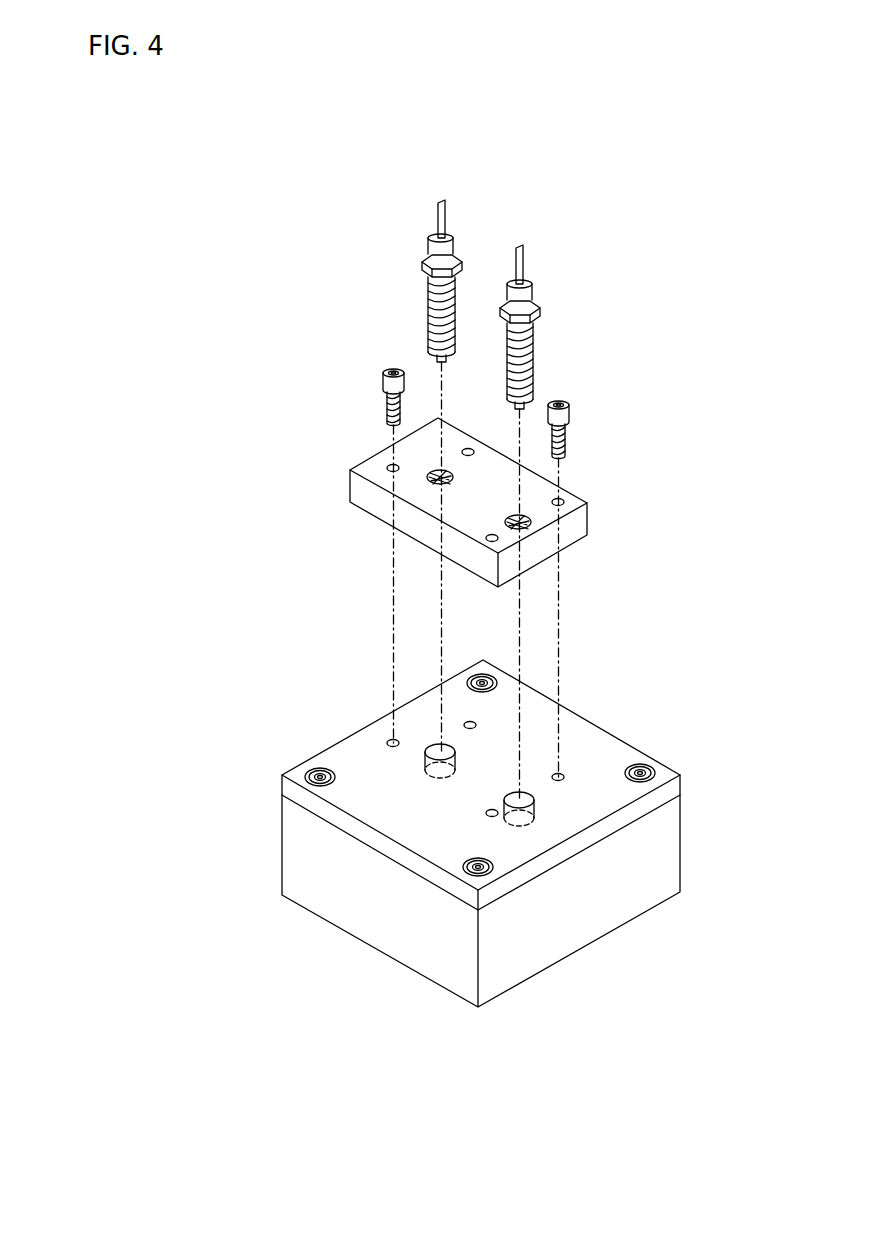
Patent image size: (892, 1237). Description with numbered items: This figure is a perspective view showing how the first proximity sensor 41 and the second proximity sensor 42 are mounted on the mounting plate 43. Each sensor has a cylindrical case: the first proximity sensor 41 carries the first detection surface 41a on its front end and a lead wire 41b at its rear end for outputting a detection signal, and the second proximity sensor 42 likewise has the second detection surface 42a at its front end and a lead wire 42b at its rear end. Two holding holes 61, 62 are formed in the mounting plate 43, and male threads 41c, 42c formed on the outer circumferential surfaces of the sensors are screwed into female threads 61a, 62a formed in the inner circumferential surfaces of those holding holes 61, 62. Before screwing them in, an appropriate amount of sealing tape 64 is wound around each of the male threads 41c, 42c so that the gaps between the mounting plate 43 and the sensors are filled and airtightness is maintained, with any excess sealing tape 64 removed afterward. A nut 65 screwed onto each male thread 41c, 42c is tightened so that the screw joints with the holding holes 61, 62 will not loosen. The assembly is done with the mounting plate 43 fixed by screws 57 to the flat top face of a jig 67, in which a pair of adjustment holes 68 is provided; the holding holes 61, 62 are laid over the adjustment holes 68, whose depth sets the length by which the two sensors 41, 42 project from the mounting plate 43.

The first proximity sensor 41 is at (415, 426).
The first detection surface 41a is at (437, 360).
The lead wire 41b is at (438, 218).
The male thread 41c is at (453, 240).
The second proximity sensor 42 is at (573, 466).
The second detection surface 42a is at (538, 406).
The lead wire 42b is at (510, 290).
The male thread 42c is at (530, 284).
The mounting plate 43 is at (588, 518).
The screw 57 is at (383, 383).
The holding hole 61 is at (432, 468).
The female thread 61a is at (436, 484).
The holding hole 62 is at (531, 522).
The female thread 62a is at (517, 532).
The sealing tape 64 is at (428, 312).
The nut 65 is at (426, 268).
The jig 67 is at (587, 930).
The adjustment hole 68 is at (502, 788).